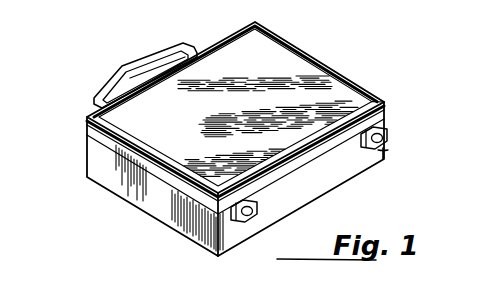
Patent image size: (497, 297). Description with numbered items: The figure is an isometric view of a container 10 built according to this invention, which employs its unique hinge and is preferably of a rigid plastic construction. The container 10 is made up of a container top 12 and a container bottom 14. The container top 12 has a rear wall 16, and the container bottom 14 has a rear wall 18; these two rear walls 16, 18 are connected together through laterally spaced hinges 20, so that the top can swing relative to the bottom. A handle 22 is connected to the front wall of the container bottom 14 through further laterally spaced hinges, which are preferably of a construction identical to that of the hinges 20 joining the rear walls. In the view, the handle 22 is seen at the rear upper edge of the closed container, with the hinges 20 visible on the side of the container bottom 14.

The container 10 is at (341, 64).
The container top 12 is at (87, 132).
The container bottom 14 is at (86, 163).
The rear wall of container top 16 is at (386, 104).
The rear wall of container bottom 18 is at (386, 157).
The hinges 20 is at (392, 137).
The handle 22 is at (143, 61).